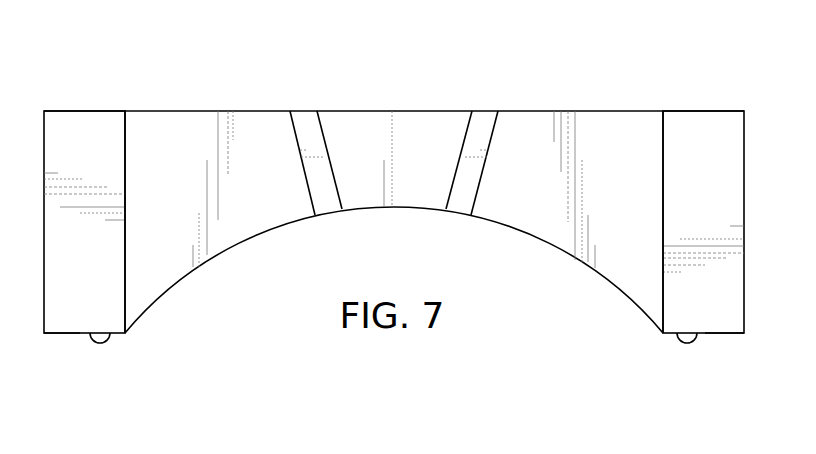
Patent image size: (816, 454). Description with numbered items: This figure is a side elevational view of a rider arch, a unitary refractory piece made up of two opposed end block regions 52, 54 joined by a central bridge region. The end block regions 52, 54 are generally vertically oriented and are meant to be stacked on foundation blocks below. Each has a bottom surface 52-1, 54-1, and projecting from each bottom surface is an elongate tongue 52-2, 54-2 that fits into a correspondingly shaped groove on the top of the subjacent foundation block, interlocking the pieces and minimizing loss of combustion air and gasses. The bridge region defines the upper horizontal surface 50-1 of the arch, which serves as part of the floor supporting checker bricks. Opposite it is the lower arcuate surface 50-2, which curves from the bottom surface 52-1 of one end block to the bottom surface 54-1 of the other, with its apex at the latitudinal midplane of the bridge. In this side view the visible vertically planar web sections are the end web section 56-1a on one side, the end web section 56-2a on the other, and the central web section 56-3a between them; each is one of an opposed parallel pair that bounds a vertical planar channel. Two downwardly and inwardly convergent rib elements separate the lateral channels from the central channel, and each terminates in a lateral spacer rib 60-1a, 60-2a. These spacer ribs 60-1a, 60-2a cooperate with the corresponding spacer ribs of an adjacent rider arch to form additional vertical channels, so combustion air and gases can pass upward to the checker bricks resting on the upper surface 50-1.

The upper horizontal surface 50-1 is at (163, 111).
The lower arcuate surface 50-2 is at (557, 247).
The end block region 52 is at (692, 187).
The bottom surface 52-1 is at (725, 333).
The elongate tongue 52-2 is at (687, 343).
The end block region 54 is at (68, 264).
The bottom surface 54-1 is at (62, 333).
The elongate tongue 54-2 is at (100, 343).
The end web section 56-1a is at (598, 187).
The end web section 56-2a is at (141, 183).
The central web section 56-3a is at (417, 168).
The lateral spacer rib 60-1a is at (478, 128).
The lateral spacer rib 60-2a is at (312, 130).